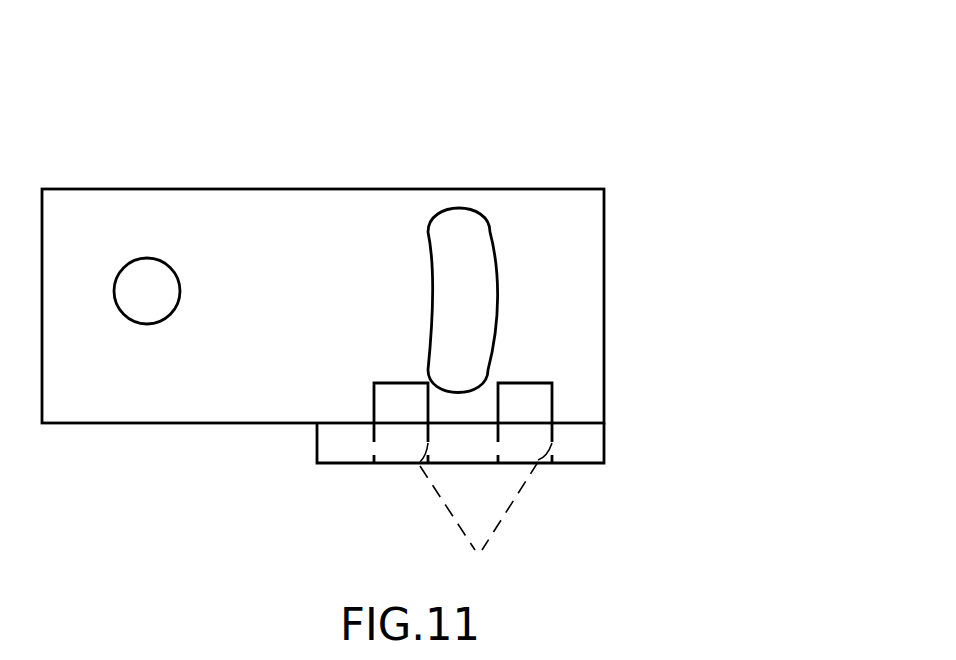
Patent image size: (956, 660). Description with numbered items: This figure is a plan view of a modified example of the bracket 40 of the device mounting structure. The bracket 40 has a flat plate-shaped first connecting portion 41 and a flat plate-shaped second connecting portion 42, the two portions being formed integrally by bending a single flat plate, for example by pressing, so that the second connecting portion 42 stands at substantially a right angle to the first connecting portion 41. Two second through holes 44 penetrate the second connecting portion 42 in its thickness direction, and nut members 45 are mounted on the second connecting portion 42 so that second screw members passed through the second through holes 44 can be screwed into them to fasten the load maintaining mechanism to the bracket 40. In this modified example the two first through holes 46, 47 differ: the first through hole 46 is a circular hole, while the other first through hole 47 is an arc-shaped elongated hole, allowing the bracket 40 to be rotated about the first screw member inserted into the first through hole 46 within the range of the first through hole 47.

The bracket 40 is at (672, 160).
The first connecting portion 41 is at (315, 190).
The second connecting portion 42 is at (332, 442).
The second through holes 44 is at (486, 510).
The nut members 45 is at (530, 370).
The first through hole 46 is at (132, 267).
The first through hole 47 is at (450, 210).